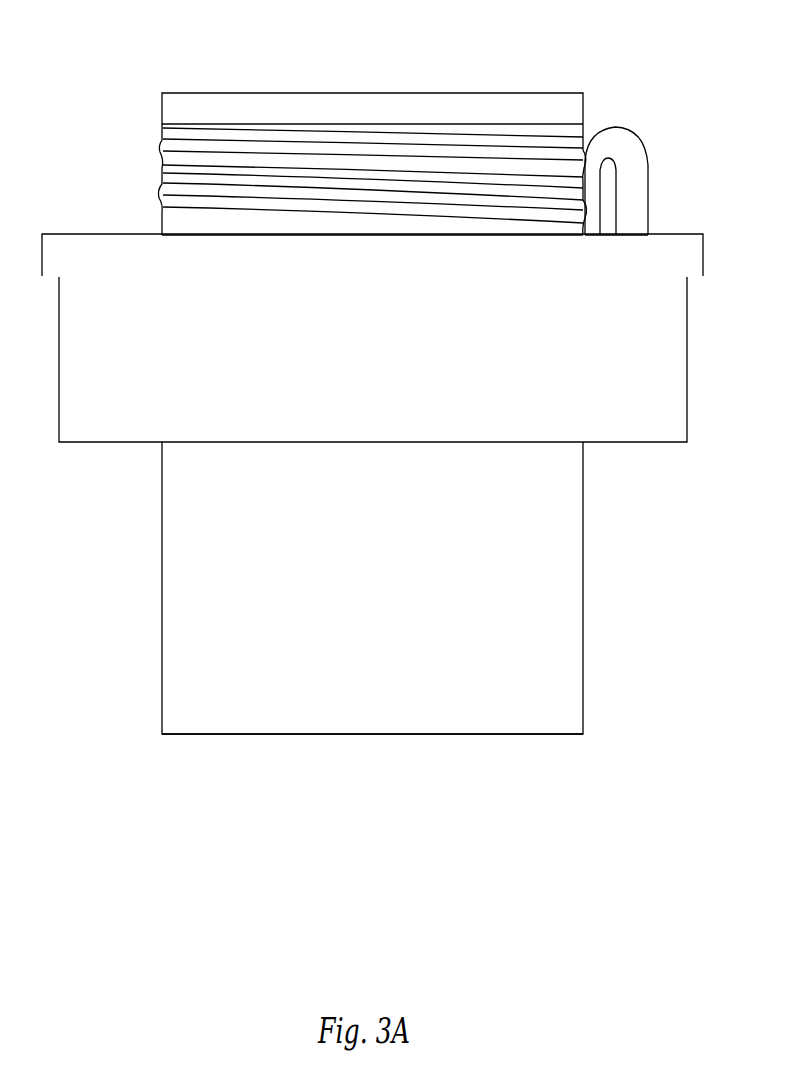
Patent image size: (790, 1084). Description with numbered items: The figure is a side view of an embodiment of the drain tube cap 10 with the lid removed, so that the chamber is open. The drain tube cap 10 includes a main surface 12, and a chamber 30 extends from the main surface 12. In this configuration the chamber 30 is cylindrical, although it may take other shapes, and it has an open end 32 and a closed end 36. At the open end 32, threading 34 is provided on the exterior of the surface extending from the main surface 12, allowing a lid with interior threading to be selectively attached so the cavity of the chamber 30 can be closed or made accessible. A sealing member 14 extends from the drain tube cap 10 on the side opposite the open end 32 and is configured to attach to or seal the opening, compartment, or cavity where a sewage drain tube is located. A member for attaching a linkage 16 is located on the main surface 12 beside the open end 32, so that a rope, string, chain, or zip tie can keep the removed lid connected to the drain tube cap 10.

The drain tube cap 10 is at (523, 46).
The main surface 12 is at (89, 234).
The sealing member 14 is at (653, 342).
The member for attaching a linkage 16 is at (627, 152).
The chamber 30 is at (175, 578).
The open end 32 is at (227, 93).
The threading 34 is at (168, 140).
The closed end 36 is at (315, 735).